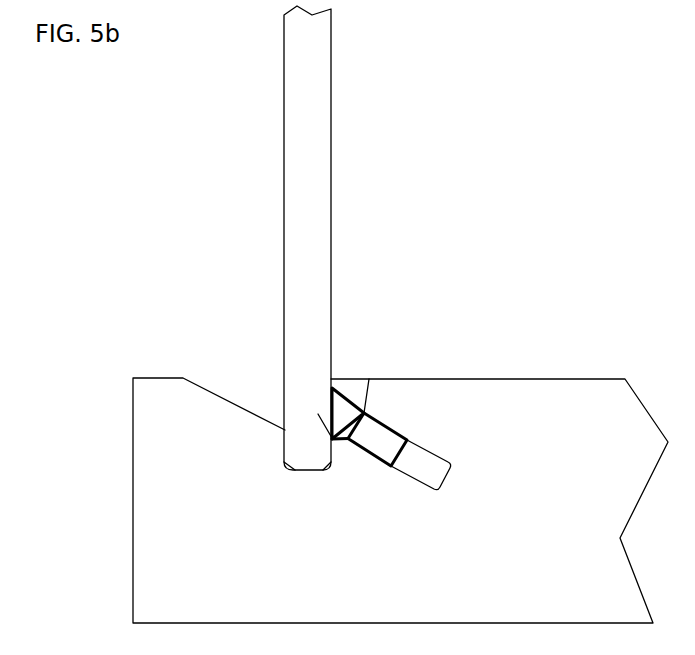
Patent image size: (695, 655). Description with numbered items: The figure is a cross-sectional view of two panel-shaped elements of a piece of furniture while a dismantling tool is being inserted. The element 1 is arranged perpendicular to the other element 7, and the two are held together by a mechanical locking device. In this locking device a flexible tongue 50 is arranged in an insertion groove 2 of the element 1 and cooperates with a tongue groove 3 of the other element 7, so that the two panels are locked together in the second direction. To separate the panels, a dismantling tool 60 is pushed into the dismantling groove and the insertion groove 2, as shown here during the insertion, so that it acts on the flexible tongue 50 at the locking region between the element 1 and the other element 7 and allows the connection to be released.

The element 1 is at (533, 388).
The insertion groove 2 is at (335, 437).
The tongue groove 3 is at (328, 414).
The other element 7 is at (296, 213).
The flexible tongue 50 is at (376, 420).
The dismantling tool 60 is at (345, 405).